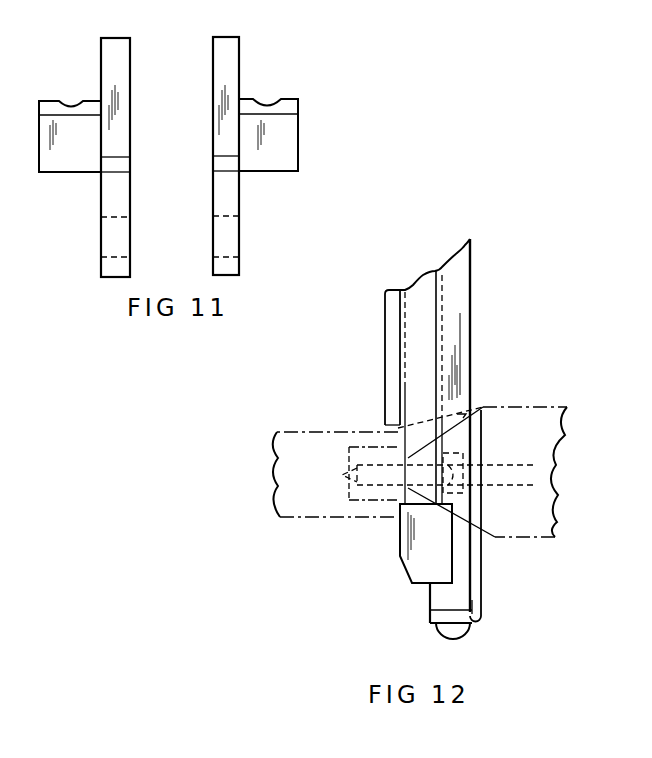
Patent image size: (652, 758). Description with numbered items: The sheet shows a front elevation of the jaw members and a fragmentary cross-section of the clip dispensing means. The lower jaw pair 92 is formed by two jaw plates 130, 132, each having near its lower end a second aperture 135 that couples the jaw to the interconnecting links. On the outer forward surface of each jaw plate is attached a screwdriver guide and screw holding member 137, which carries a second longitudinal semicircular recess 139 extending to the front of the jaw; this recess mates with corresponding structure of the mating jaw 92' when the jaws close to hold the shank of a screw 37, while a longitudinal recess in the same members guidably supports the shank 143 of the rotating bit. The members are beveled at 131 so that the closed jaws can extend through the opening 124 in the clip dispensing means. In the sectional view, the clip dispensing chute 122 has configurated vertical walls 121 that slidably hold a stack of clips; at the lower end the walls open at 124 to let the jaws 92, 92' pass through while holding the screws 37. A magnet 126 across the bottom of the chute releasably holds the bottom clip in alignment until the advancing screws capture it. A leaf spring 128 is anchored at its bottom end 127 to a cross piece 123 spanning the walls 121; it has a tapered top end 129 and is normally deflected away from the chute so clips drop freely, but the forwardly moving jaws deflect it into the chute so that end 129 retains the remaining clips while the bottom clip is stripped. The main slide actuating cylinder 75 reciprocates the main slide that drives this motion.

In FIG. 11, the jaw plate 130 is at (240, 54).
In FIG. 11, the jaw plate 132 is at (100, 52).
In FIG. 11, the bevel 131 is at (86, 151).
In FIG. 11, the second aperture 135 is at (108, 242).
In FIG. 11, the screwdriver guide and screw holding member 137 is at (50, 167).
In FIG. 11, the second longitudinal semicircular recess 139 is at (268, 101).
In FIG. 12, the vertical walls 121 is at (458, 293).
In FIG. 12, the clip dispensing chute 122 is at (458, 319).
In FIG. 12, the cross piece 123 is at (432, 612).
In FIG. 12, the opening 124 is at (390, 432).
In FIG. 12, the magnet 126 is at (402, 562).
In FIG. 12, the bottom end 127 is at (481, 626).
In FIG. 12, the leaf spring 128 is at (497, 604).
In FIG. 12, the tapered top end 129 is at (473, 388).
In FIG. 12, the lower jaw pair 92 is at (487, 495).
In FIG. 12, the mating jaw 92' is at (512, 396).
In FIG. 12, the shank 143 is at (505, 462).
In FIG. 12, the main slide actuating cylinder 75 is at (305, 515).
In FIG. 12, the screw 37 is at (370, 490).